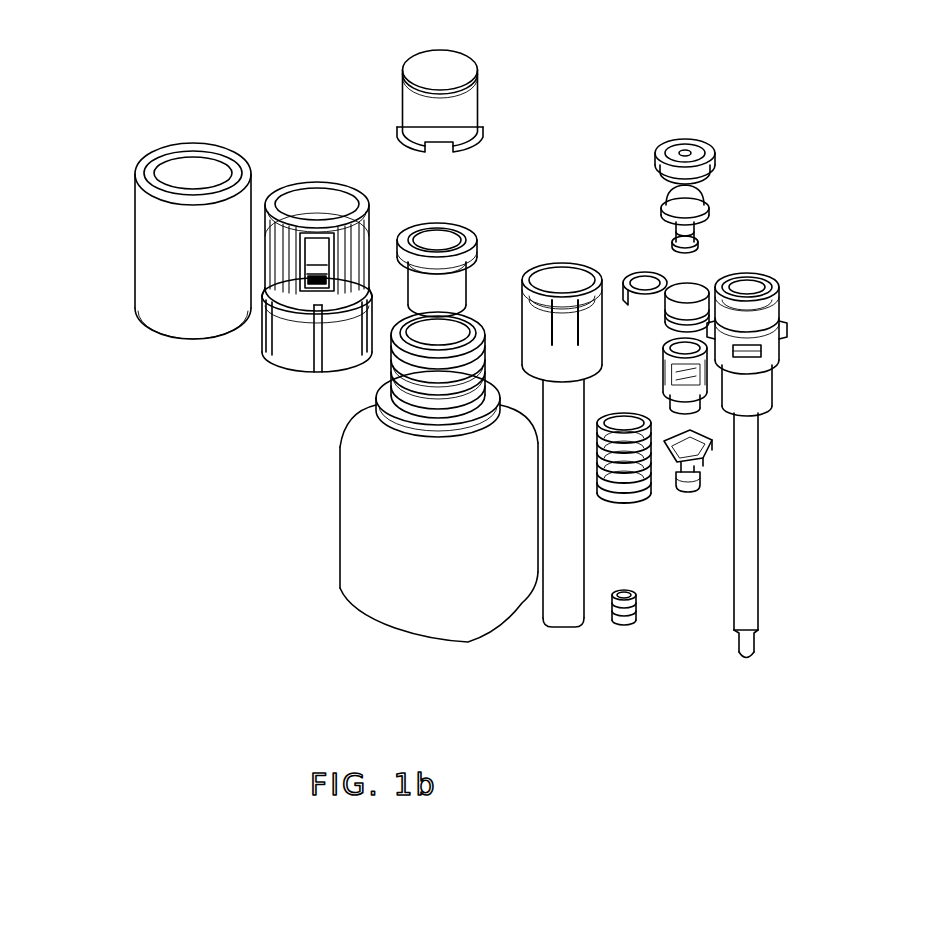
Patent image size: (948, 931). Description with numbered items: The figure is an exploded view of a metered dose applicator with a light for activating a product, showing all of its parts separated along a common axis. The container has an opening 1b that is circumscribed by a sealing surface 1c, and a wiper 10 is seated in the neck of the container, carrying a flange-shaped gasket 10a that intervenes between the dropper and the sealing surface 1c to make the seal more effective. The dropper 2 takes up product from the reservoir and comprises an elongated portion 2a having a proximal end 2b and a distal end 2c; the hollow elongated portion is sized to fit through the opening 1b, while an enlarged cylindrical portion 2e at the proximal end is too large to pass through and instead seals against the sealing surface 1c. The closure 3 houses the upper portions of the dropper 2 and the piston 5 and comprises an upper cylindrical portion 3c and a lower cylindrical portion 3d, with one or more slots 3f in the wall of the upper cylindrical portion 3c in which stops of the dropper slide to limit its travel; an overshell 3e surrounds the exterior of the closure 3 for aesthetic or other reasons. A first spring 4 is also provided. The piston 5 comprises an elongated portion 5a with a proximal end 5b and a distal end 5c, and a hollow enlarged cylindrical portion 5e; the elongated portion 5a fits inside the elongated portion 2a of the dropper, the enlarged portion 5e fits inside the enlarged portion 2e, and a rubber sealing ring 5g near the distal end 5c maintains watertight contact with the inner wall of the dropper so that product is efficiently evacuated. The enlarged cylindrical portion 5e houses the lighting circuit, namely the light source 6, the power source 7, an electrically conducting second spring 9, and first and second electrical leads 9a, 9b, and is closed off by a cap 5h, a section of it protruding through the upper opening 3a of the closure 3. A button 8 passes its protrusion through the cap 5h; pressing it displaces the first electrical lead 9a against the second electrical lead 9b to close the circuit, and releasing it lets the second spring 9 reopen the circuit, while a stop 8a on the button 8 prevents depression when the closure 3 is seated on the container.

The opening 1b is at (473, 312).
The sealing surface 1c is at (473, 327).
The dropper 2 is at (526, 440).
The elongated portion 2a is at (562, 580).
The proximal end 2b is at (582, 265).
The distal end 2c is at (553, 626).
The enlarged cylindrical portion 2e is at (578, 352).
The closure 3 is at (202, 307).
The upper opening 3a is at (313, 205).
The upper cylindrical portion 3c is at (299, 337).
The lower cylindrical portion 3d is at (280, 192).
The overshell 3e is at (160, 268).
The slots 3f is at (272, 338).
The first spring 4 is at (622, 503).
The piston 5 is at (816, 443).
The elongated portion 5a is at (750, 500).
The proximal end 5b is at (780, 280).
The distal end 5c is at (757, 658).
The enlarged cylindrical portion 5e is at (781, 343).
The sealing ring 5g is at (638, 618).
The cap 5h is at (700, 135).
The light source 6 is at (683, 497).
The power source 7 is at (690, 286).
The button 8 is at (491, 101).
The stop 8a is at (478, 138).
The second spring 9 is at (723, 193).
The first electrical lead 9a is at (692, 196).
The second electrical lead 9b is at (647, 297).
The wiper 10 is at (357, 171).
The gasket 10a is at (417, 280).